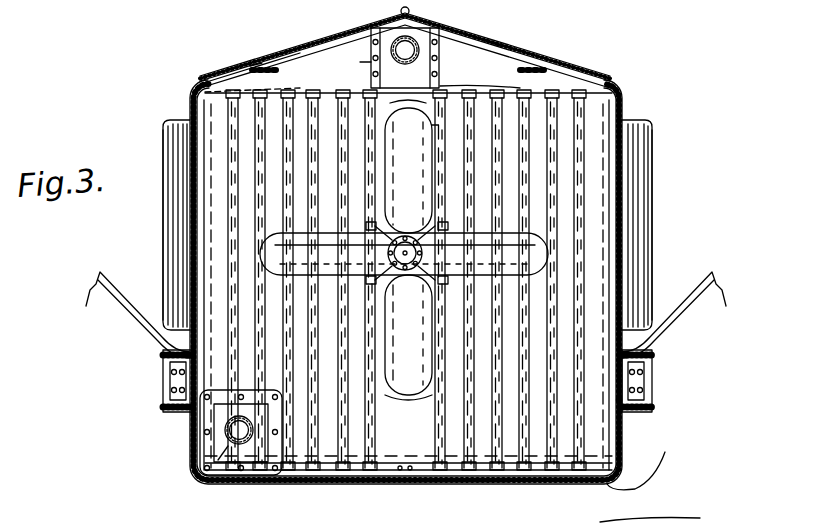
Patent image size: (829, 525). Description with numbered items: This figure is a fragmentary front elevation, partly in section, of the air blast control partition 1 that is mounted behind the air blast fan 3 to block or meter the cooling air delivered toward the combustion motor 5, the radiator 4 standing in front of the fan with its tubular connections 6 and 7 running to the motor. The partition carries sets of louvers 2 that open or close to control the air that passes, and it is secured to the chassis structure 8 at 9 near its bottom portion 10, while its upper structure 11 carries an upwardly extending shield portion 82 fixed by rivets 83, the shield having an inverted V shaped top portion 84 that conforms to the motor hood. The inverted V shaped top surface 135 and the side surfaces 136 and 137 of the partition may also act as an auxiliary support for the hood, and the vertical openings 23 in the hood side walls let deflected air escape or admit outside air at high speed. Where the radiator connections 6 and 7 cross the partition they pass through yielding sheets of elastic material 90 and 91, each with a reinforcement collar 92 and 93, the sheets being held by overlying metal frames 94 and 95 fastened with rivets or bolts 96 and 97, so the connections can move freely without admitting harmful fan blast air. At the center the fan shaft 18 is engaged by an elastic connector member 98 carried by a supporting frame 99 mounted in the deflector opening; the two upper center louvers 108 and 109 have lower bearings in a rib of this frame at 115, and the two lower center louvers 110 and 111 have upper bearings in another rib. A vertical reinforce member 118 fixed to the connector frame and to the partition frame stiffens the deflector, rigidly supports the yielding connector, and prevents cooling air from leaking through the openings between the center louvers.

The partition 1 is at (600, 112).
The louvers 2 is at (190, 345).
The air blast fan 3 is at (432, 176).
The radiator 4 is at (360, 455).
The combustion motor 5 is at (300, 232).
The radiator connection 6 is at (490, 46).
The radiator connection 7 is at (228, 440).
The chassis structure 8 is at (652, 372).
The securing point 9 is at (652, 390).
The bottom portion 10 is at (612, 426).
The upper structure 11 is at (456, 86).
The fan shaft 18 is at (422, 252).
The vertical opening 23 is at (648, 220).
The shield portion 82 is at (272, 62).
The rivets 83 is at (318, 84).
The top portion 84 is at (372, 33).
The sheet of elastic material 90 is at (440, 60).
The sheet of elastic material 91 is at (214, 460).
The reinforcement collar 92 is at (416, 38).
The reinforcement collar 93 is at (252, 462).
The metal frame 94 is at (485, 40).
The metal frame 95 is at (200, 423).
The rivets or bolts 96 is at (371, 62).
The rivets or bolts 97 is at (238, 444).
The elastic connector member 98 is at (398, 282).
The supporting frame 99 is at (372, 278).
The upper center louver 108 is at (380, 176).
The upper center louver 109 is at (434, 135).
The lower center louver 110 is at (380, 460).
The lower center louver 111 is at (430, 460).
The bearing 115 is at (418, 106).
The reinforce member 118 is at (410, 412).
The inverted V shaped top surface 135 is at (322, 46).
The side surface 136 is at (188, 131).
The side surface 137 is at (618, 155).